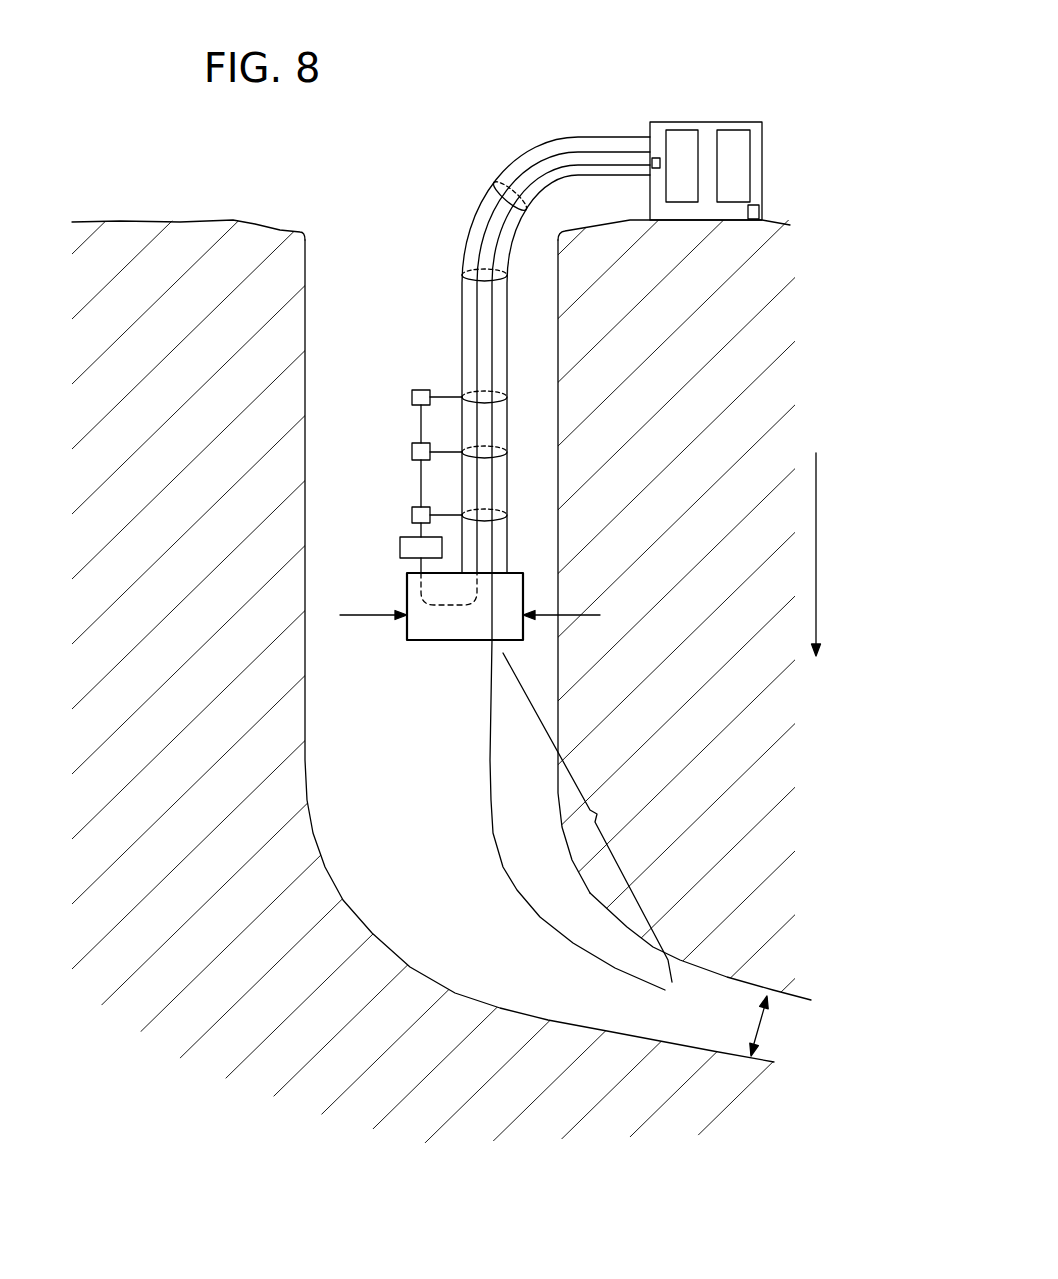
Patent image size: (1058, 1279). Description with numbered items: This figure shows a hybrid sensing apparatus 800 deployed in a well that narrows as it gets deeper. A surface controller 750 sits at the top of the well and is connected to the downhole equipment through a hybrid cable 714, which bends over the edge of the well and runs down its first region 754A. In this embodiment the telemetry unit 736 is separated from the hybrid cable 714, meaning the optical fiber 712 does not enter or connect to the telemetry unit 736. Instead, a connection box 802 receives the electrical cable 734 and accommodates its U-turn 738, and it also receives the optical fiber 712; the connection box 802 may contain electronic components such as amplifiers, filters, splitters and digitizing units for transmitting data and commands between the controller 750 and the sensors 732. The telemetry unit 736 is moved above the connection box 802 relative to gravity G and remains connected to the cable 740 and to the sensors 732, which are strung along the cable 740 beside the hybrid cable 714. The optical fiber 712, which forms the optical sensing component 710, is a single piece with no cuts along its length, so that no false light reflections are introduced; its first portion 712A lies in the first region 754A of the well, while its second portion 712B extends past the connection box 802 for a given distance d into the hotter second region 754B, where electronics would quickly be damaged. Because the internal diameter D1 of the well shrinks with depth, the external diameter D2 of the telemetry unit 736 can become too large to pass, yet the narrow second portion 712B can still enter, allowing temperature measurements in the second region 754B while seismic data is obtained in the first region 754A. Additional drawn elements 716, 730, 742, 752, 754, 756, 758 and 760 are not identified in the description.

The hybrid sensing apparatus 800 is at (483, 86).
The optical sensing component 710 is at (571, 157).
The optical fiber 712 is at (502, 235).
The first portion of the optical fiber 712A is at (494, 480).
The second portion of the optical fiber 712B is at (520, 888).
The hybrid cable 714 is at (461, 308).
The connector 716 is at (655, 157).
The downhole tool 730 is at (400, 663).
The sensors 732 is at (411, 517).
The electrical cable 734 is at (518, 167).
The telemetry unit 736 is at (400, 549).
The U-turn 738 is at (450, 603).
The cable 740 is at (421, 480).
The sensor 742 is at (445, 394).
The controller 750 is at (718, 122).
The ground surface 752 is at (157, 221).
The wellbore 754 is at (307, 388).
The first region of the well 754A is at (556, 412).
The second region of the well 754B is at (738, 985).
The processor (CPU) 756 is at (678, 203).
The memory (MEM) 758 is at (737, 203).
The interface 760 is at (766, 213).
The connection box 802 is at (472, 642).
The given distance d is at (587, 817).
The internal diameter of the well D1 is at (774, 1026).
The external diameter of the telemetry unit D2 is at (568, 615).
The gravity G is at (817, 535).